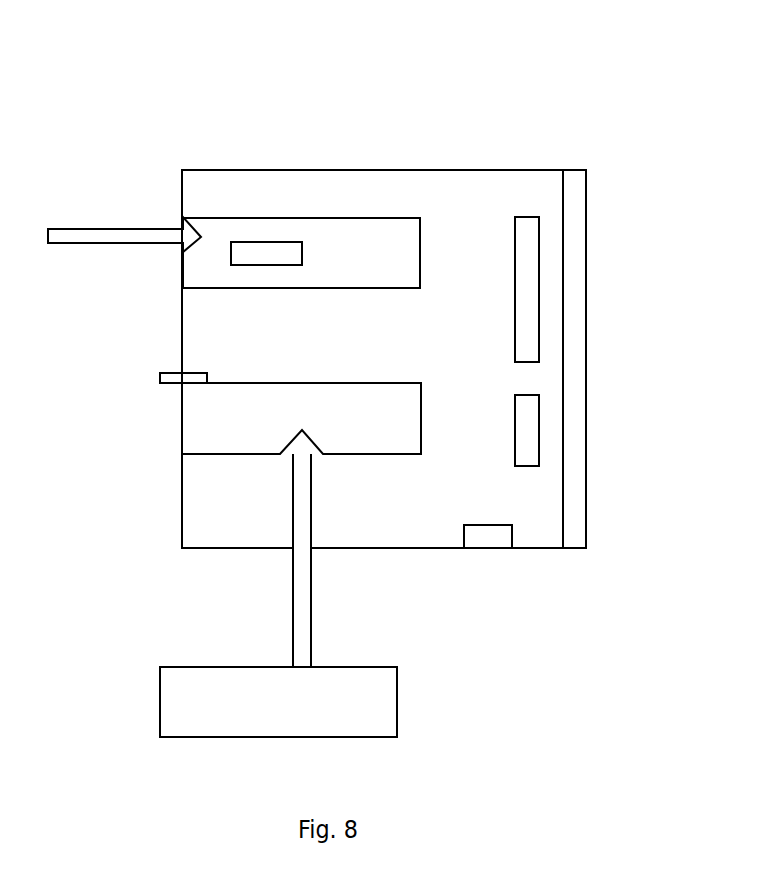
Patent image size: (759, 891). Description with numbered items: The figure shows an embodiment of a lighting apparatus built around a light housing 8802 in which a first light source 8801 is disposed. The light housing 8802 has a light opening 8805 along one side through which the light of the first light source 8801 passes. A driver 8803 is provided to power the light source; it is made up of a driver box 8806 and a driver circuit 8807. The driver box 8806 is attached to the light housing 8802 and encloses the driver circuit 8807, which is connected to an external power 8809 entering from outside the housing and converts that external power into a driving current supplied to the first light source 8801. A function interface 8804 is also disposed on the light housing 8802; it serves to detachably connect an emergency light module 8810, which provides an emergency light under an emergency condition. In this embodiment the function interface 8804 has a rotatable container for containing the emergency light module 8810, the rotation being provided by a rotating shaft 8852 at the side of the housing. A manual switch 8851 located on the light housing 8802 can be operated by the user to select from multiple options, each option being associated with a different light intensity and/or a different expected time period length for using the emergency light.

The first light source 8801 is at (530, 243).
The light housing 8802 is at (351, 192).
The driver 8803 is at (210, 235).
The function interface 8804 is at (197, 418).
The light opening 8805 is at (575, 205).
The driver box 8806 is at (202, 260).
The driver circuit 8807 is at (272, 262).
The external power 8809 is at (70, 232).
The emergency light module 8810 is at (182, 694).
The manual switch 8851 is at (497, 537).
The rotating shaft 8852 is at (182, 372).